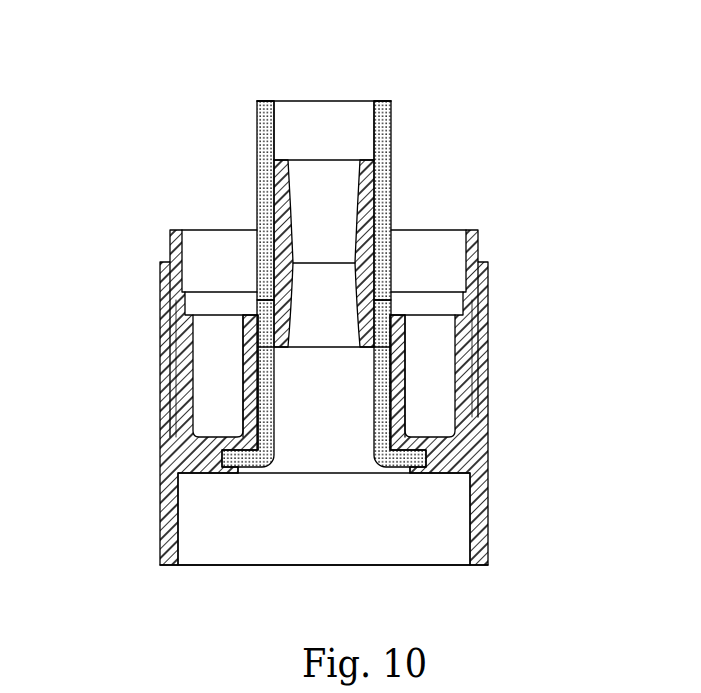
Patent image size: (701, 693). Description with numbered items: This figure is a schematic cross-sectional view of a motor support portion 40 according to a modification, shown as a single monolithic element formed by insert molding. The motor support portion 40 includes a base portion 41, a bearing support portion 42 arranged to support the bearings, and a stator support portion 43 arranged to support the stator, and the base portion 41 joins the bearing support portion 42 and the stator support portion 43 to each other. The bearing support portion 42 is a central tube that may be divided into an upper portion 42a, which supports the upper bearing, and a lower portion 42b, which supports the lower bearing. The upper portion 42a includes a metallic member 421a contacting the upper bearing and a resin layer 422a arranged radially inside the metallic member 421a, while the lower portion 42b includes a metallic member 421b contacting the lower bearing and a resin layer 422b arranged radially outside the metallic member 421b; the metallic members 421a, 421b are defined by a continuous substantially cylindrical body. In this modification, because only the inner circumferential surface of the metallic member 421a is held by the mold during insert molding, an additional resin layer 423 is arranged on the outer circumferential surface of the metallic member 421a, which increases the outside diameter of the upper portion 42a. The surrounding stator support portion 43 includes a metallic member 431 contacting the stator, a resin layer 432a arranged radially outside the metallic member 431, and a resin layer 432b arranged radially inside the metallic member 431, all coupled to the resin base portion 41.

The motor support portion 40 is at (185, 99).
The base portion 41 is at (208, 458).
The bearing support portion 42 is at (629, 157).
The upper portion 42a is at (574, 157).
The lower portion 42b is at (574, 233).
The metallic member 421a is at (391, 178).
The resin layer 422a is at (378, 210).
The metallic member 421b is at (386, 352).
The resin layer 422b is at (398, 386).
The resin layer 423 is at (257, 152).
The stator support portion 43 is at (56, 257).
The metallic member 431 is at (170, 245).
The resin layer 432a is at (165, 287).
The resin layer 432b is at (170, 330).